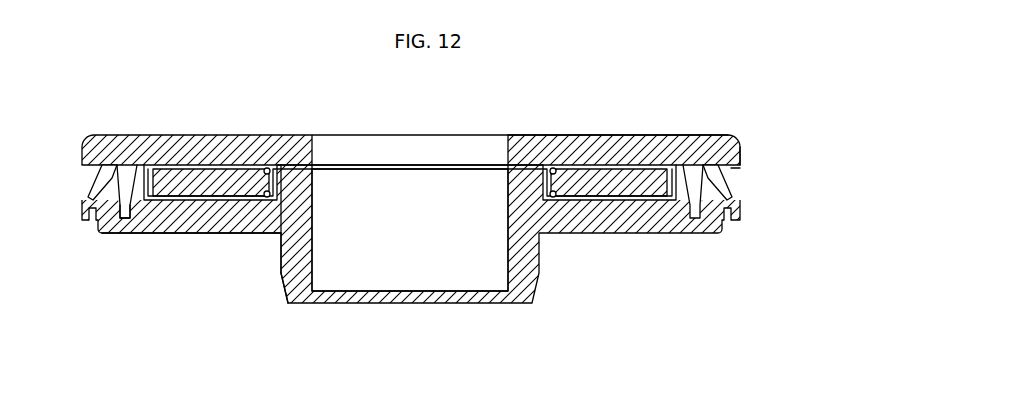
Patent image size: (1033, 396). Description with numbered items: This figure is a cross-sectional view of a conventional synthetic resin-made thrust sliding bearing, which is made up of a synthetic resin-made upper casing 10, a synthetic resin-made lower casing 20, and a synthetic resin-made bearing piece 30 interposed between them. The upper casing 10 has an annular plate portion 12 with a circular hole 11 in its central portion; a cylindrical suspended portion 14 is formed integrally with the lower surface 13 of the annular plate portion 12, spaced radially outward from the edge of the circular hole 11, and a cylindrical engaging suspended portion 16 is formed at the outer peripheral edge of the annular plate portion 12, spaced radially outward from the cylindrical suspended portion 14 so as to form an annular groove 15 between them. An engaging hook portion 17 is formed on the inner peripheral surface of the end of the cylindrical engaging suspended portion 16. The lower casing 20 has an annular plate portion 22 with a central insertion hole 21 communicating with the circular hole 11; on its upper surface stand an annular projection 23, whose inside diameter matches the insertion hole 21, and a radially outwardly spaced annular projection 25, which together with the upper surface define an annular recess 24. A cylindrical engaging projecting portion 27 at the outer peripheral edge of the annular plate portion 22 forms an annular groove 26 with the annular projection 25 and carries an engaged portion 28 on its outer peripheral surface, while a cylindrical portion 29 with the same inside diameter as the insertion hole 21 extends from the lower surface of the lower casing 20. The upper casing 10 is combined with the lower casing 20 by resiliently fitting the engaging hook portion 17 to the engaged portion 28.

The upper casing 10 is at (587, 143).
The circular hole 11 is at (419, 145).
The annular plate portion 12 is at (637, 142).
The lower surface 13 is at (642, 178).
The cylindrical suspended portion 14 is at (693, 182).
The annular groove 15 is at (720, 183).
The cylindrical engaging suspended portion 16 is at (736, 168).
The engaging hook portion 17 is at (727, 212).
The lower casing 20 is at (250, 224).
The insertion hole 21 is at (412, 236).
The annular plate portion 22 is at (196, 224).
The annular projection 23 is at (300, 190).
The annular recess 24 is at (166, 186).
The annular projection 25 is at (128, 190).
The annular groove 26 is at (125, 214).
The cylindrical engaging projecting portion 27 is at (100, 172).
The engaged portion 28 is at (90, 212).
The cylindrical portion 29 is at (302, 265).
The bearing piece 30 is at (578, 202).